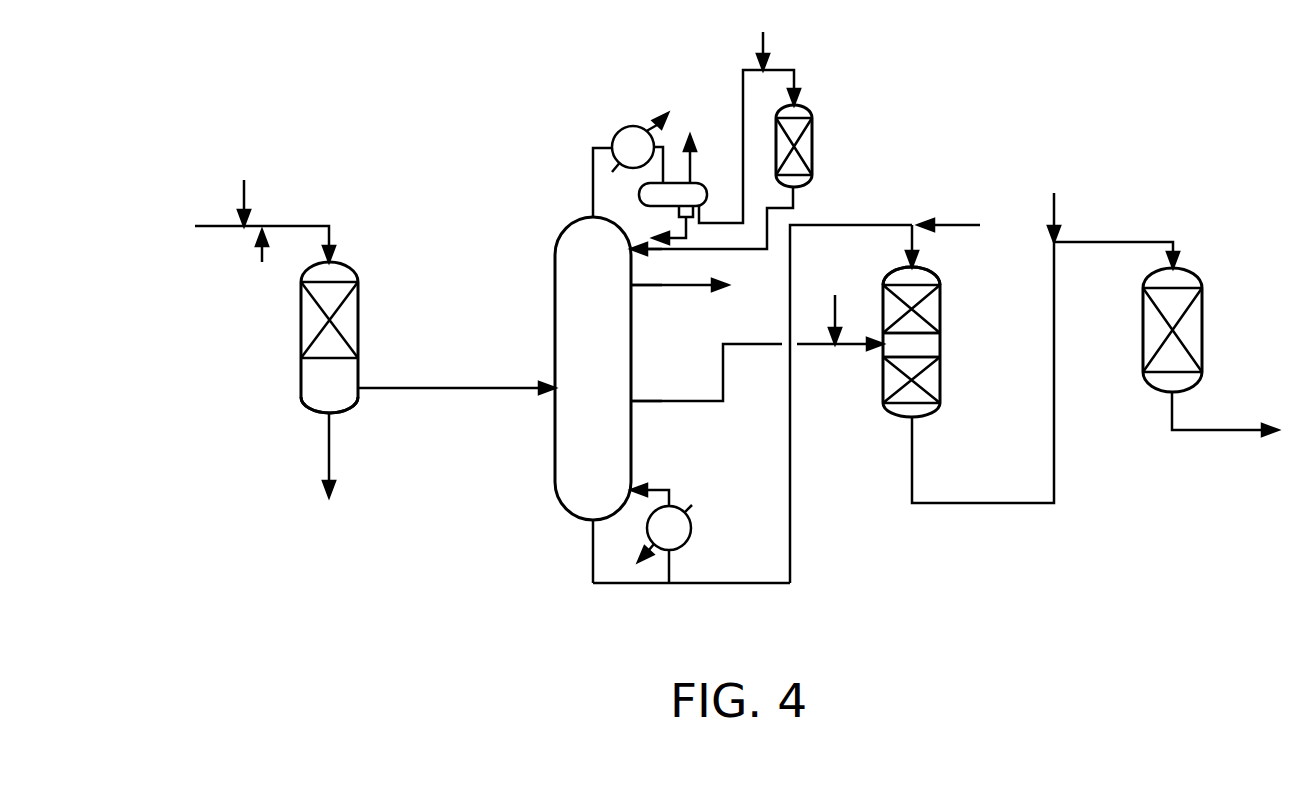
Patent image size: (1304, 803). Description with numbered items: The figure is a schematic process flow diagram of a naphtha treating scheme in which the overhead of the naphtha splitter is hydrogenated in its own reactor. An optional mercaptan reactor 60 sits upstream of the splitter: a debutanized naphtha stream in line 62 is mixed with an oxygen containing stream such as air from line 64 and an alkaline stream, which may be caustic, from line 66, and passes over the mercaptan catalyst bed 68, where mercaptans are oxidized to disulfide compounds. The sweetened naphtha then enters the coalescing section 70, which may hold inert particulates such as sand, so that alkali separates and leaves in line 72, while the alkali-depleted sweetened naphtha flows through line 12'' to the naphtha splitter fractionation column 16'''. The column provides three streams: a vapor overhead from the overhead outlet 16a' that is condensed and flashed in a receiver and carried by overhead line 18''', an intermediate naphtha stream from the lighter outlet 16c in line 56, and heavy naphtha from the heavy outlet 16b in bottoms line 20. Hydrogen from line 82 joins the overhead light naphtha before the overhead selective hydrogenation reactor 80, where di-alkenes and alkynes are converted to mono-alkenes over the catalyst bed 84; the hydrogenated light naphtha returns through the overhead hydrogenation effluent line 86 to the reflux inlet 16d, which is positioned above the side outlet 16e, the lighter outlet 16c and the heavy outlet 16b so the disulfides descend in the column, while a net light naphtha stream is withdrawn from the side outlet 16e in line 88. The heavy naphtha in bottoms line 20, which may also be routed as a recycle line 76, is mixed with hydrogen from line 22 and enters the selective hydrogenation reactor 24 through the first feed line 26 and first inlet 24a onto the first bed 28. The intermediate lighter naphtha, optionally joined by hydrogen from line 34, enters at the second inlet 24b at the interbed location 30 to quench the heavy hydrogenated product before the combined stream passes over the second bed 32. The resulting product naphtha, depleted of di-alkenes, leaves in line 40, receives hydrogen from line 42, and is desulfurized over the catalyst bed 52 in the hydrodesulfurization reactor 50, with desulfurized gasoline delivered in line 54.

The sweetened naphtha line 12'' is at (456, 408).
The naphtha splitter fractionation column 16''' is at (612, 365).
The overhead outlet 16a' is at (562, 182).
The heavy outlet 16b is at (592, 523).
The lighter outlet 16c is at (632, 398).
The reflux inlet 16d is at (632, 253).
The side outlet 16e is at (632, 290).
The overhead line 18''' is at (745, 146).
The bottoms line 20 is at (738, 586).
The hydrogen line 22 is at (962, 223).
The selective hydrogenation reactor 24 is at (908, 329).
The first inlet 24a is at (913, 266).
The second inlet 24b is at (882, 348).
The first feed line 26 is at (908, 238).
The first bed 28 is at (940, 302).
The interbed location 30 is at (940, 345).
The second bed 32 is at (940, 377).
The hydrogen line 34 is at (835, 318).
The product naphtha line 40 is at (988, 505).
The hydrogen line 42 is at (1054, 210).
The hydrodesulfurization reactor 50 is at (1205, 317).
The hydrodesulfurization catalyst bed 52 is at (1202, 333).
The gasoline stream line 54 is at (1230, 433).
The intermediate naphtha line 56 is at (700, 403).
The mercaptan reactor 60 is at (325, 363).
The debutanized naphtha line 62 is at (219, 228).
The oxygen containing stream line 64 is at (245, 192).
The alkaline stream line 66 is at (262, 258).
The mercaptan catalyst bed 68 is at (350, 323).
The coalescing section 70 is at (338, 398).
The separated alkaline line 72 is at (327, 437).
The recycle line 76 is at (851, 404).
The overhead selective hydrogenation reactor 80 is at (823, 132).
The hydrogen line 82 is at (765, 40).
The selective hydrogenation catalyst bed 84 is at (807, 152).
The overhead hydrogenation effluent line 86 is at (793, 203).
The net light naphtha line 88 is at (677, 287).